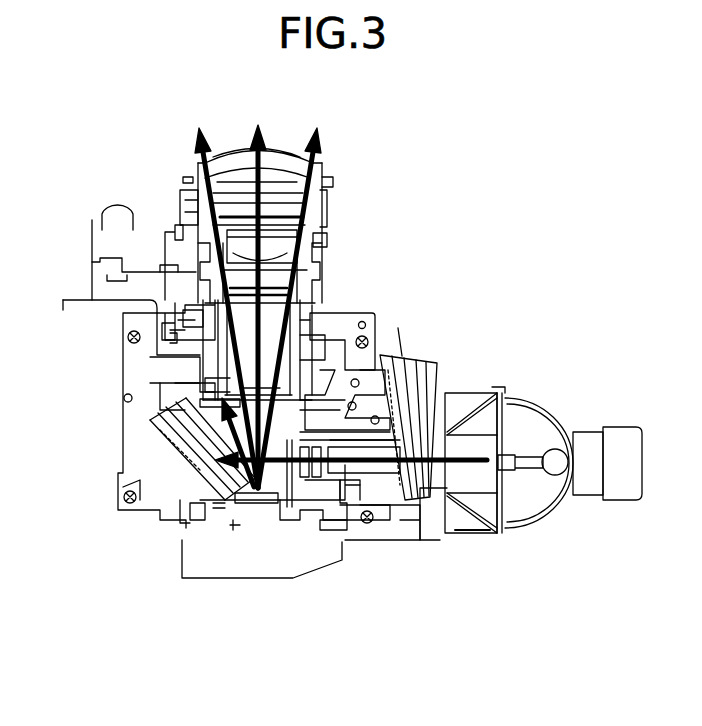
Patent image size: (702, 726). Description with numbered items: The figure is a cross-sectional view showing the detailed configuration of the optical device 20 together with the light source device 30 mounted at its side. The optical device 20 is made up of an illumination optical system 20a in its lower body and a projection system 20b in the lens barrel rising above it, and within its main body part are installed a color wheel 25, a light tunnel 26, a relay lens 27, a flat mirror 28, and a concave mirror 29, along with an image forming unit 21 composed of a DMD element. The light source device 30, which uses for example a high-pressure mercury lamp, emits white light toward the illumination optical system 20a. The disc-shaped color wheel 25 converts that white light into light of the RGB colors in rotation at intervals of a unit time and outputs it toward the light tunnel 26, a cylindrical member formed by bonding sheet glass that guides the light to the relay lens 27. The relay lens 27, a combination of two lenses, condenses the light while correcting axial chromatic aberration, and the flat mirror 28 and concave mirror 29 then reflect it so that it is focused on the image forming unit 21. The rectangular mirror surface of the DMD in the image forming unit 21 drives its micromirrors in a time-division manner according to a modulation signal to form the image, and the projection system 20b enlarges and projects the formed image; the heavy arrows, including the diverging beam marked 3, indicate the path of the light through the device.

The optical device 20 is at (75, 222).
The illumination optical system 20a is at (75, 300).
The projection system 20b is at (340, 213).
The light beam 3 is at (287, 155).
The image forming unit 21 is at (253, 503).
The color wheel 25 is at (440, 378).
The light tunnel 26 is at (374, 478).
The relay lens 27 is at (320, 477).
The flat mirror 28 is at (212, 458).
The concave mirror 29 is at (222, 410).
The light source device 30 is at (558, 522).